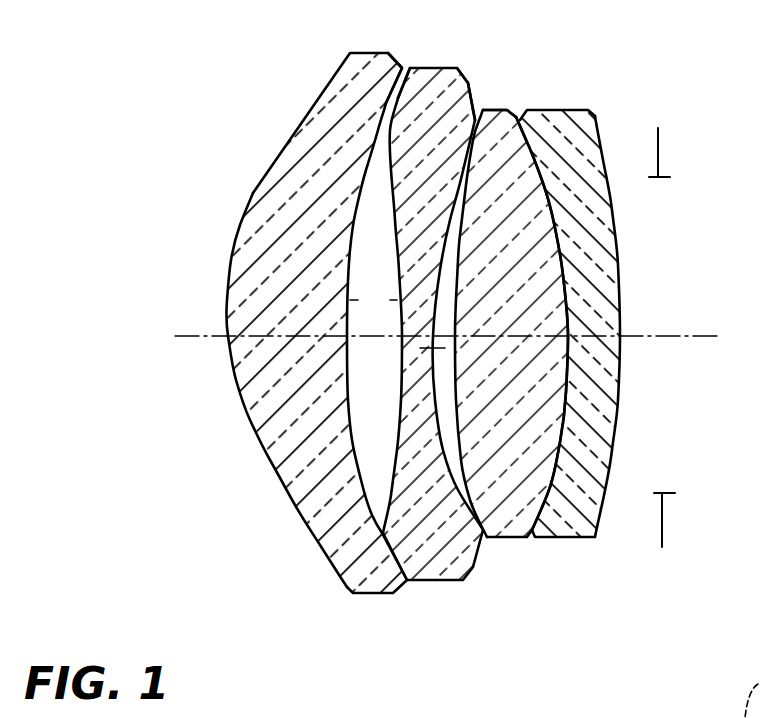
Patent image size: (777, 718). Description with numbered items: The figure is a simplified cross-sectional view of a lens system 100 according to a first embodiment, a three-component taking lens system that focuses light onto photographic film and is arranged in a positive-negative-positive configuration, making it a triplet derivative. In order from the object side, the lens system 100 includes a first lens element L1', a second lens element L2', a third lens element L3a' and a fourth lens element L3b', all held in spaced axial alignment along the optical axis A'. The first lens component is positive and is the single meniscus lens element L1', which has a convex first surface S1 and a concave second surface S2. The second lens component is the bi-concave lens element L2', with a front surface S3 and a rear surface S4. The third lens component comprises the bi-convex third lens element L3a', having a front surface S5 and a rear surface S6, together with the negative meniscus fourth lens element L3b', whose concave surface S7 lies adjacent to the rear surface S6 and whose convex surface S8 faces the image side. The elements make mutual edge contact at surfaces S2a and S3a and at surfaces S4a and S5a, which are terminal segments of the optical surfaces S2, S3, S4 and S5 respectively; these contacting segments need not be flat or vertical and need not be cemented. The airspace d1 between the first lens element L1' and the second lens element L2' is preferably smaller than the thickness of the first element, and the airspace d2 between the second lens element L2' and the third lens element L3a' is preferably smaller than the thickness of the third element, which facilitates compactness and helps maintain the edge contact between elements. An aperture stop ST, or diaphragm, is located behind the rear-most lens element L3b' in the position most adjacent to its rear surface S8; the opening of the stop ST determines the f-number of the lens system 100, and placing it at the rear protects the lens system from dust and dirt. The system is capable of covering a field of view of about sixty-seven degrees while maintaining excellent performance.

The lens system 100 is at (222, 140).
The first surface S1 is at (230, 262).
The second surface S2 is at (360, 183).
The contacting surface S2a is at (383, 105).
The front surface S3 is at (383, 157).
The contacting surface S3a is at (400, 98).
The rear surface S4 is at (463, 183).
The contacting surface S4a is at (478, 118).
The front surface S5 is at (458, 238).
The contacting surface S5a is at (488, 108).
The rear surface S6 is at (553, 208).
The concave surface S7 is at (542, 323).
The convex surface S8 is at (620, 265).
The optical axis A' is at (448, 306).
The airspace d1 is at (373, 302).
The airspace d2 is at (435, 349).
The first lens element L1' is at (316, 347).
The second lens element L2' is at (433, 354).
The third lens element L3a' is at (511, 375).
The fourth lens element L3b' is at (578, 375).
The aperture stop ST is at (676, 520).